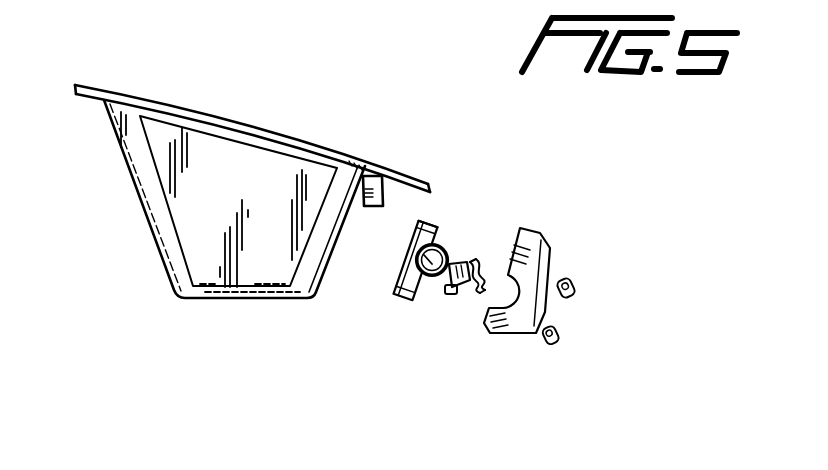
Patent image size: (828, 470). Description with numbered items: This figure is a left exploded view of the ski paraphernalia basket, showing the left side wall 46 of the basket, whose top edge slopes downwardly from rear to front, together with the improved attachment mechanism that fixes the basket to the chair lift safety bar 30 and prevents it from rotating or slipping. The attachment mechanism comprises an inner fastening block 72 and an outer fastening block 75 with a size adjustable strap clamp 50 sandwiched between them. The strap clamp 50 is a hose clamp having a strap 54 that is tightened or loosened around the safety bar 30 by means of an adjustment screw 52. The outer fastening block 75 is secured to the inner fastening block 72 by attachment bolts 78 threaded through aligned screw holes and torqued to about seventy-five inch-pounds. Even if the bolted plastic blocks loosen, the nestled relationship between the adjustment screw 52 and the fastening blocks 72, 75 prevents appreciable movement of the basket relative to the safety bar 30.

The left side wall 46 is at (207, 235).
The safety bar 30 is at (398, 300).
The inner fastening block 72 is at (427, 219).
The strap 54 is at (452, 242).
The adjustment screw 52 is at (449, 294).
The adjustable strap clamp 50 is at (480, 293).
The outer fastening block 75 is at (548, 238).
The attachment bolts 78 is at (578, 292).